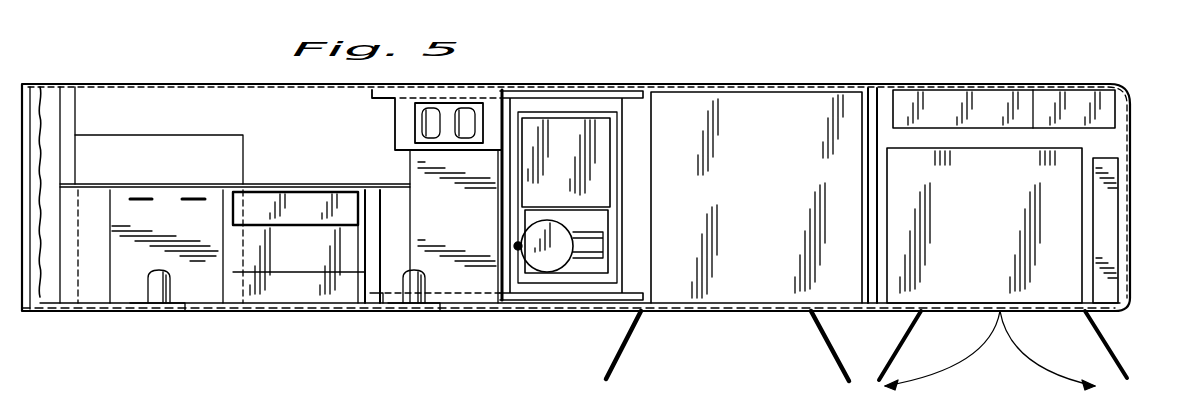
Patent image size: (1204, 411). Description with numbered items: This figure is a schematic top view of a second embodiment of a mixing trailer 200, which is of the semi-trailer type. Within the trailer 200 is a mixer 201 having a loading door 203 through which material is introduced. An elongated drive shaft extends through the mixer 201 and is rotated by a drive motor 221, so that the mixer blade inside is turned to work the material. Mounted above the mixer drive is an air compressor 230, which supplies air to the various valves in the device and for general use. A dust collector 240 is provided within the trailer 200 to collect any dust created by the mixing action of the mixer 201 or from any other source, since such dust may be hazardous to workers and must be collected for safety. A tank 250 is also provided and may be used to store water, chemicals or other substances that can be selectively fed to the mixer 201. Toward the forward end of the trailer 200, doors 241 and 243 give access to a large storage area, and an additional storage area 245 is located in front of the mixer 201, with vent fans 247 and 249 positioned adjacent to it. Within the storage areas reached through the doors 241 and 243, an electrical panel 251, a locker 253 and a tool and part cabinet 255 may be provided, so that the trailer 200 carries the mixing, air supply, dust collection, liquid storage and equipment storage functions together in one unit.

The mixing trailer 200 is at (864, 84).
The mixer 201 is at (120, 104).
The loading door 203 is at (311, 136).
The drive motor 221 is at (463, 268).
The air compressor 230 is at (500, 92).
The dust collector 240 is at (596, 173).
The door 241 is at (623, 353).
The door 243 is at (895, 352).
The storage area 245 is at (285, 280).
The vent fan 247 is at (411, 304).
The vent fan 249 is at (156, 304).
The tank 250 is at (615, 266).
The electrical panel 251 is at (1108, 210).
The locker 253 is at (1083, 95).
The tool and part cabinet 255 is at (995, 84).